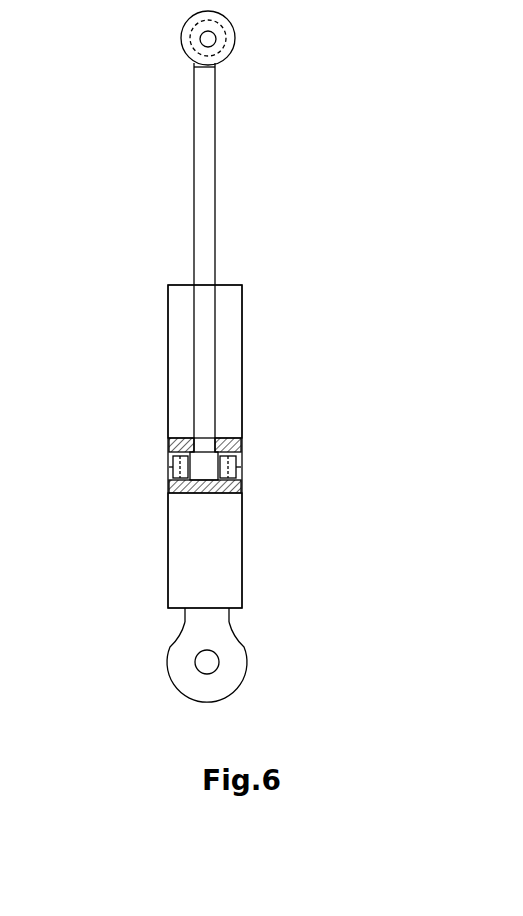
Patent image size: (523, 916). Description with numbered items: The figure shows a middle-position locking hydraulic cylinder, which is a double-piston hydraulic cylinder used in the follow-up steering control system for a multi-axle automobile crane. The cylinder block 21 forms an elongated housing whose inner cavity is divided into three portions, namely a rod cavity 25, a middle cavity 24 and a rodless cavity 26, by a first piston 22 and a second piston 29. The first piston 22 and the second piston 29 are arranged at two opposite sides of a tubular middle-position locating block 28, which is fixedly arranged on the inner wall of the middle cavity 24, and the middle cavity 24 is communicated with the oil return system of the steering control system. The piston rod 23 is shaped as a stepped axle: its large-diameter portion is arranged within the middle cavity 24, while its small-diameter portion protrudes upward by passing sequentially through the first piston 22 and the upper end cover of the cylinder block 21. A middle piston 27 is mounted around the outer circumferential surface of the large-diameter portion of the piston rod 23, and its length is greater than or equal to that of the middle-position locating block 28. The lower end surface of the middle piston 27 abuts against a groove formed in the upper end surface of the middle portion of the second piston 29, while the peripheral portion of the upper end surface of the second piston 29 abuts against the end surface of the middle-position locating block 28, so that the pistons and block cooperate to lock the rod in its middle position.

The cylinder block 21 is at (296, 493).
The first piston 22 is at (296, 367).
The piston rod 23 is at (302, 231).
The middle cavity 24 is at (120, 431).
The rod cavity 25 is at (147, 356).
The rodless cavity 26 is at (147, 539).
The middle piston 27 is at (321, 416).
The middle-position locating block 28 is at (306, 461).
The second piston 29 is at (296, 511).